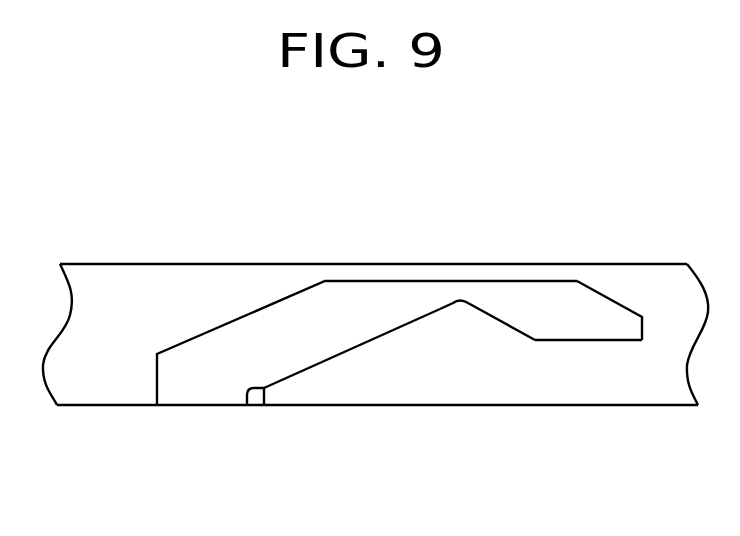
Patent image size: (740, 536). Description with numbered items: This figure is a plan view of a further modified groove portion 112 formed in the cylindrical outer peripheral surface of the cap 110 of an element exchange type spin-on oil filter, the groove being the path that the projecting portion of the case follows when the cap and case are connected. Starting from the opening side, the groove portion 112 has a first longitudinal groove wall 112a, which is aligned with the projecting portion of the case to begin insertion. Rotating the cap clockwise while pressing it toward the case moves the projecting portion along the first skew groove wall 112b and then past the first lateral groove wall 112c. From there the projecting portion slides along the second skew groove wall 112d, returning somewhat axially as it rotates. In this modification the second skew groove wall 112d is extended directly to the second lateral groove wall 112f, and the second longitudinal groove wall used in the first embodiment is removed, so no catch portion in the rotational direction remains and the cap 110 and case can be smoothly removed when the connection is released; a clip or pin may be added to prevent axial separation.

The cap 110 is at (107, 290).
The groove portion 112 is at (395, 330).
The first longitudinal groove wall 112a is at (247, 393).
The first skew groove wall 112b is at (375, 340).
The first lateral groove wall 112c is at (458, 303).
The second skew groove wall 112d is at (507, 322).
The second lateral groove wall 112f is at (570, 340).